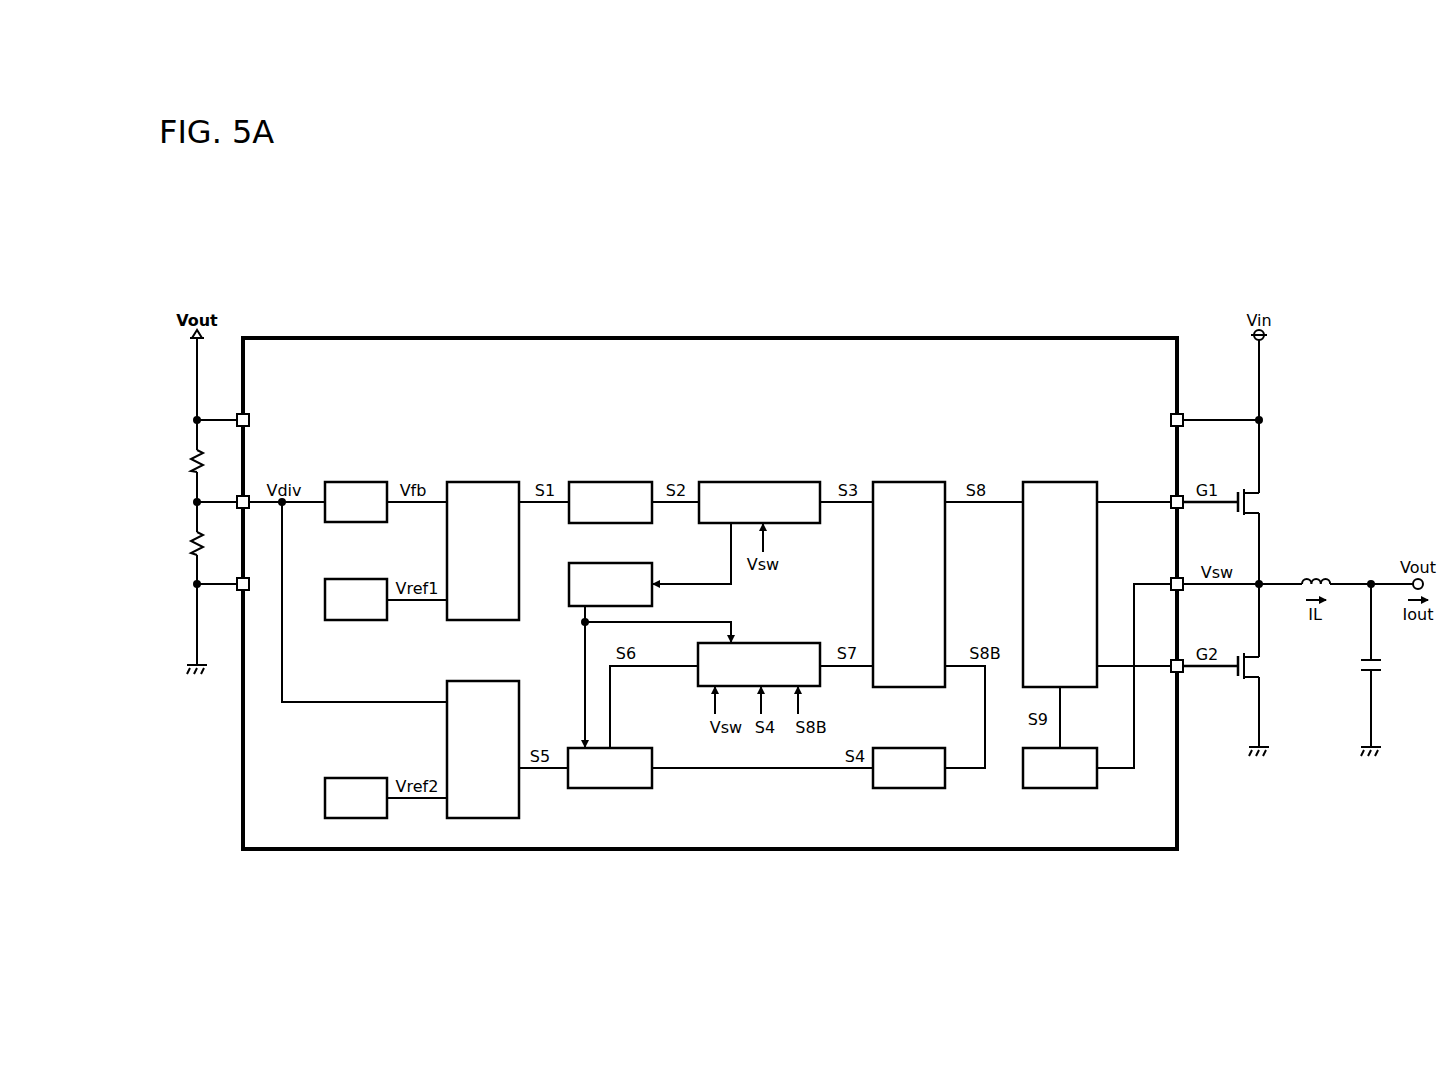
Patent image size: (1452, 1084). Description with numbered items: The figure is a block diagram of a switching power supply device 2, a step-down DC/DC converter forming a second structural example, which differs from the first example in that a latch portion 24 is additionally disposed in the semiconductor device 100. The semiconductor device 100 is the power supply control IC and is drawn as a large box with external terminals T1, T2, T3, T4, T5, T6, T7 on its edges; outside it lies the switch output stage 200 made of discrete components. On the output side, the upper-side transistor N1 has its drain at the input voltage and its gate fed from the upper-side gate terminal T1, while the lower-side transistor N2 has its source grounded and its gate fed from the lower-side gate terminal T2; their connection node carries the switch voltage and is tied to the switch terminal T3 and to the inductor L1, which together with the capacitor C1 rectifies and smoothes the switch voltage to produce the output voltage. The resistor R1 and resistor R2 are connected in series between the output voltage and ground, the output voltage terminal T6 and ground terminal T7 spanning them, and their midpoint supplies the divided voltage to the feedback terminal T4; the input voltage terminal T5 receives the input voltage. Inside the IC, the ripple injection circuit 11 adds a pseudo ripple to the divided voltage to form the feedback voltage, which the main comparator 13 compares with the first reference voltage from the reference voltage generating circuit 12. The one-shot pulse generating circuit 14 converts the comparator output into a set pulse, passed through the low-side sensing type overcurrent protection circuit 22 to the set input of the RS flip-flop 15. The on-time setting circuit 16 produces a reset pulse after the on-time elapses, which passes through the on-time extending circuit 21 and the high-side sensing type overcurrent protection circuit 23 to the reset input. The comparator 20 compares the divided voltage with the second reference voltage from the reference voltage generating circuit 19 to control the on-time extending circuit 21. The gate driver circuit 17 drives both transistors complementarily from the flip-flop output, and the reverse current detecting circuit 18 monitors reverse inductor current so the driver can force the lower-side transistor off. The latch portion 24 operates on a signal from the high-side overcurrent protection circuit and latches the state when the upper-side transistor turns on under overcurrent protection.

The switching power supply device 2 is at (1404, 296).
The semiconductor device 100 is at (699, 338).
The switch output stage 200 is at (1362, 482).
The ripple injection circuit 11 is at (357, 482).
The reference voltage generating circuit 12 is at (357, 579).
The main comparator 13 is at (485, 482).
The one-shot pulse generating circuit 14 is at (614, 482).
The RS flip-flop 15 is at (912, 482).
The on-time setting circuit 16 is at (912, 747).
The gate driver circuit 17 is at (1062, 482).
The reverse current detecting circuit 18 is at (1087, 747).
The reference voltage generating circuit 19 is at (357, 778).
The comparator 20 is at (485, 681).
The on-time extending circuit 21 is at (642, 747).
The low-side sensing type overcurrent protection circuit 22 is at (762, 482).
The high-side sensing type overcurrent protection circuit 23 is at (762, 643).
The latch portion 24 is at (614, 563).
The resistor R1 is at (169, 461).
The resistor R2 is at (169, 543).
The upper-side transistor N1 is at (1242, 502).
The lower-side transistor N2 is at (1242, 666).
The inductor L1 is at (1317, 570).
The capacitor C1 is at (1390, 665).
The upper-side gate terminal T1 is at (1177, 508).
The lower-side gate terminal T2 is at (1177, 672).
The switch terminal T3 is at (1177, 590).
The feedback terminal T4 is at (243, 508).
The input voltage terminal T5 is at (1177, 426).
The output voltage terminal T6 is at (243, 426).
The ground terminal T7 is at (243, 590).